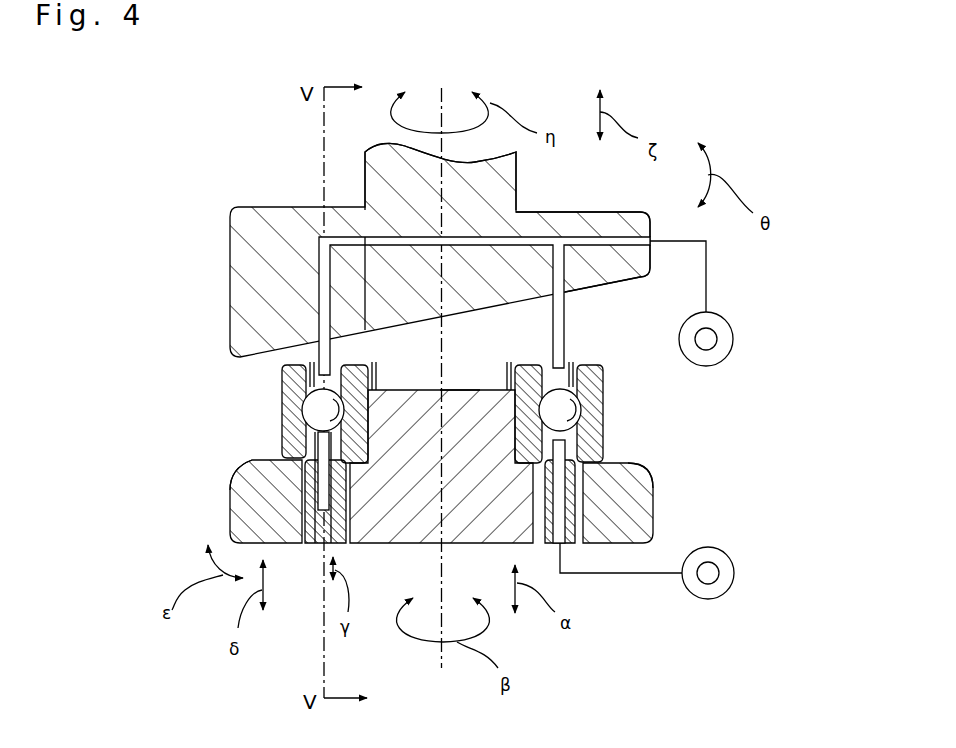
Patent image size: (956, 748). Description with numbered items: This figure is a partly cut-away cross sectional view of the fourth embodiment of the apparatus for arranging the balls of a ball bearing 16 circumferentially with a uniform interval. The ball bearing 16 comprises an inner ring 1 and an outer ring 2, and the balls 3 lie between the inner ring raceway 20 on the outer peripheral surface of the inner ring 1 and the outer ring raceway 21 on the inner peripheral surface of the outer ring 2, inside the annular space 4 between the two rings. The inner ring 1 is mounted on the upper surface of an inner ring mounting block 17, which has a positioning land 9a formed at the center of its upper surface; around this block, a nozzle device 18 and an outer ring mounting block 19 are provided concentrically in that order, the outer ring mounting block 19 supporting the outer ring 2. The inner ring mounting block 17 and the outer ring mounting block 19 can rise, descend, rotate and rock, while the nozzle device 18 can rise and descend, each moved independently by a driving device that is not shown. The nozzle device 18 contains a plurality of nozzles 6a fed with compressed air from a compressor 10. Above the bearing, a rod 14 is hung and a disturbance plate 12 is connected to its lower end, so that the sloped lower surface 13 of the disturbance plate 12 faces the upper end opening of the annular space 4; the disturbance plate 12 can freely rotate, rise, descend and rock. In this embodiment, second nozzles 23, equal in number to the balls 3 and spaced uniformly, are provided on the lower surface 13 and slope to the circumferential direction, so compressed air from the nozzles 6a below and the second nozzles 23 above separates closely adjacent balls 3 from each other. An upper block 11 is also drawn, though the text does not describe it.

The inner ring 1 is at (353, 372).
The outer ring 2 is at (290, 371).
The balls 3 is at (317, 410).
The annular space 4 is at (570, 485).
The nozzles 6a is at (277, 477).
The positioning land 9a is at (460, 392).
The compressor 10 is at (733, 339).
The upper block 11 is at (305, 252).
The disturbance plate 12 is at (612, 222).
The lower surface 13 is at (617, 283).
The rod 14 is at (498, 190).
The ball bearing 16 is at (552, 428).
The inner ring mounting block 17 is at (372, 545).
The nozzle device 18 is at (320, 545).
The outer ring mounting block 19 is at (645, 513).
The inner ring raceway 20 is at (305, 437).
The outer ring raceway 21 is at (552, 435).
The second nozzles 23 is at (317, 313).